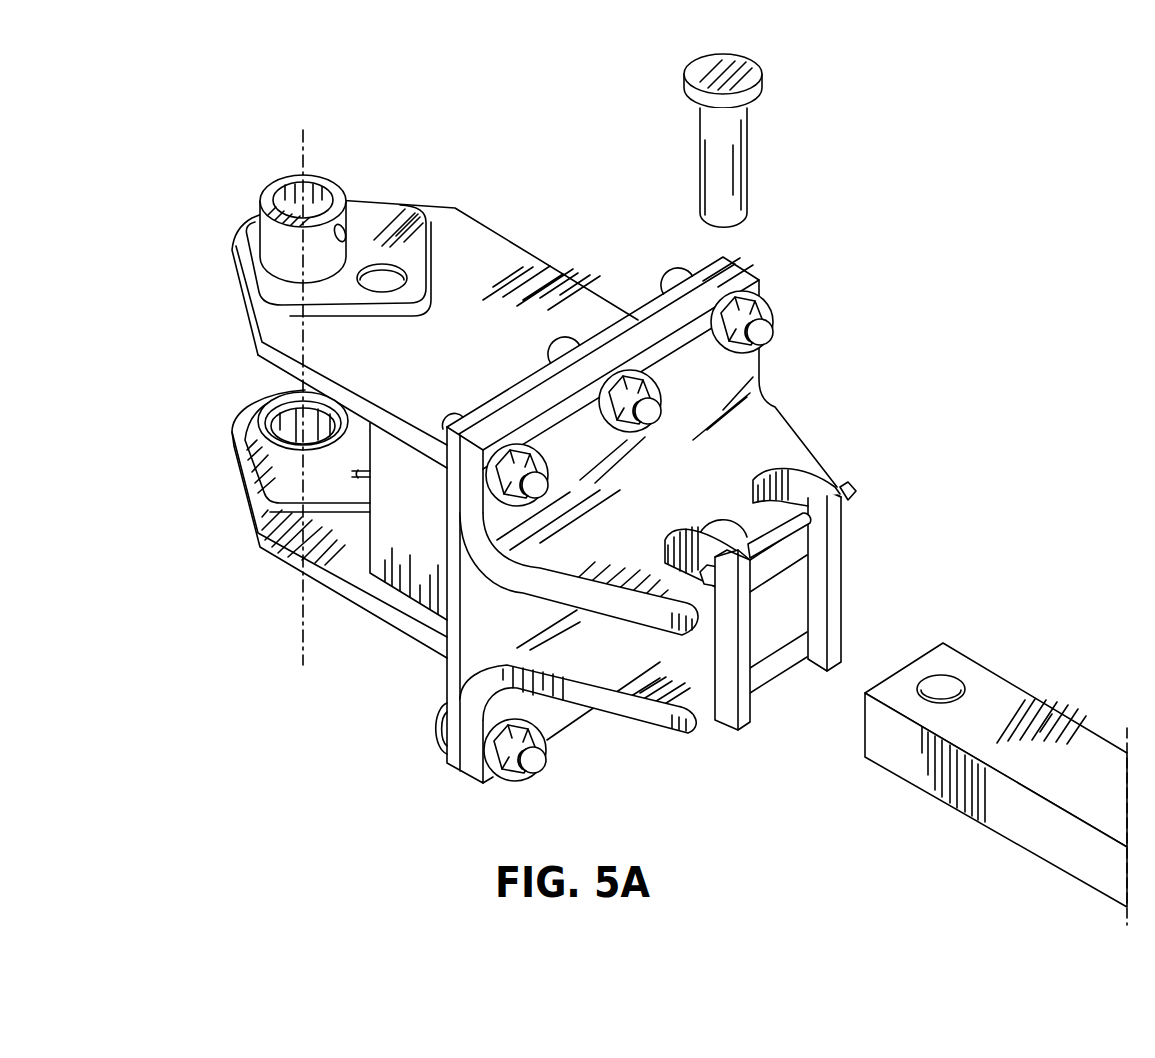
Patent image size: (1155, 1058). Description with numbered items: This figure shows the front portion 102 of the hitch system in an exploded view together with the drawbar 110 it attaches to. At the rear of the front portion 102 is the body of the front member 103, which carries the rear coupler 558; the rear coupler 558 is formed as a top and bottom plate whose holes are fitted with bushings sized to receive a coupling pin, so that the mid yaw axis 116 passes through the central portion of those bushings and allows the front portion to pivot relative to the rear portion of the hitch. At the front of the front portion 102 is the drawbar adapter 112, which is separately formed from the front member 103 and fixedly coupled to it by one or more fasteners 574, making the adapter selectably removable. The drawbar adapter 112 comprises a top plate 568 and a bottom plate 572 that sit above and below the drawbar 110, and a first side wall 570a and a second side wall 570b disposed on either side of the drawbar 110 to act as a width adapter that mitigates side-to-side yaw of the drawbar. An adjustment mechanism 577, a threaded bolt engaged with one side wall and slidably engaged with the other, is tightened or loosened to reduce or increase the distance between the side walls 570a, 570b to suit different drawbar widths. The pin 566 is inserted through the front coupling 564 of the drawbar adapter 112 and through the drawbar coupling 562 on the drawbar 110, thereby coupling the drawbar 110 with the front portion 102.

The front portion 102 is at (547, 87).
The front member 103 is at (428, 616).
The drawbar 110 is at (996, 767).
The drawbar adapter 112 is at (777, 698).
The mid yaw axis 116 is at (300, 622).
The rear coupler 558 is at (270, 236).
The drawbar coupling 562 is at (943, 688).
The front coupling 564 is at (740, 532).
The pin 566 is at (733, 77).
The top plate 568 is at (752, 465).
The first side wall 570a is at (742, 722).
The second side wall 570b is at (838, 625).
The bottom plate 572 is at (633, 715).
The fasteners 574 is at (544, 765).
The adjustment mechanism 577 is at (856, 491).